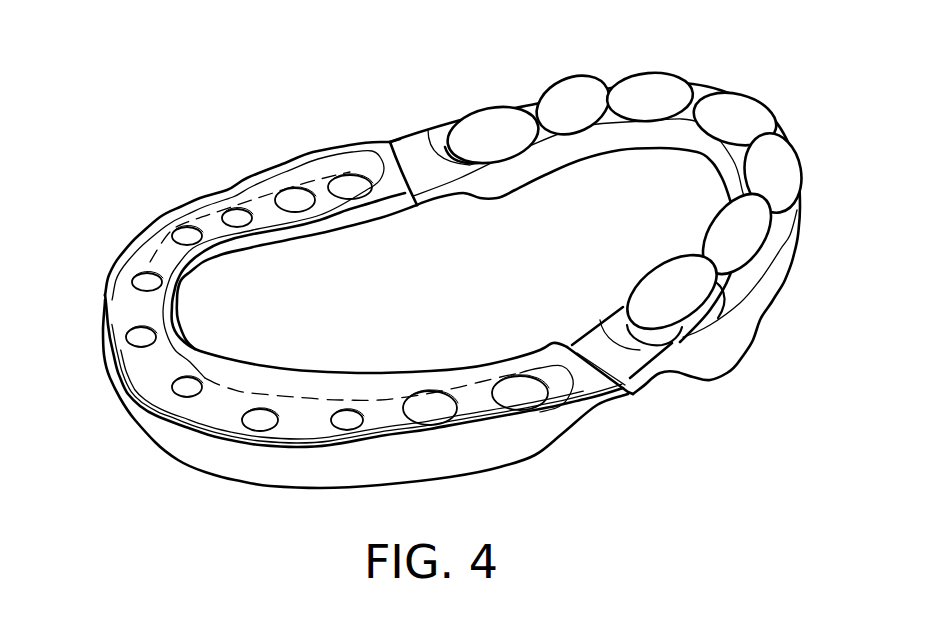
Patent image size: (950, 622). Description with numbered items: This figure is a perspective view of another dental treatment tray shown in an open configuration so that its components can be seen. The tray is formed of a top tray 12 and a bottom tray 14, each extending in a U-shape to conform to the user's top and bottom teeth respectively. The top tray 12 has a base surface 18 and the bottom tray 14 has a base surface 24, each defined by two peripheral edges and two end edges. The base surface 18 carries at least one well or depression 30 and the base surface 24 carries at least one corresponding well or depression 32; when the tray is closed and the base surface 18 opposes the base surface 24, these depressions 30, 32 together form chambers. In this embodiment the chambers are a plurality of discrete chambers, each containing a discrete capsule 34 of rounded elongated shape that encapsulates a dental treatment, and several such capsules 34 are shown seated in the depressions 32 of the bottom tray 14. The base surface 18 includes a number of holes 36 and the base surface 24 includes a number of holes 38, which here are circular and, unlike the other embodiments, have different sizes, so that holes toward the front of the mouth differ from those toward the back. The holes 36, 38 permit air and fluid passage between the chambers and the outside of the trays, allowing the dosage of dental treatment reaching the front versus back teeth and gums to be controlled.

The top tray 12 is at (126, 210).
The bottom tray 14 is at (771, 369).
The base surface 18 is at (400, 187).
The base surface 24 is at (418, 162).
The well or depression 30 is at (135, 313).
The well or depression 32 is at (737, 280).
The capsule 34 is at (735, 118).
The hole 36 is at (188, 392).
The hole 38 is at (663, 338).